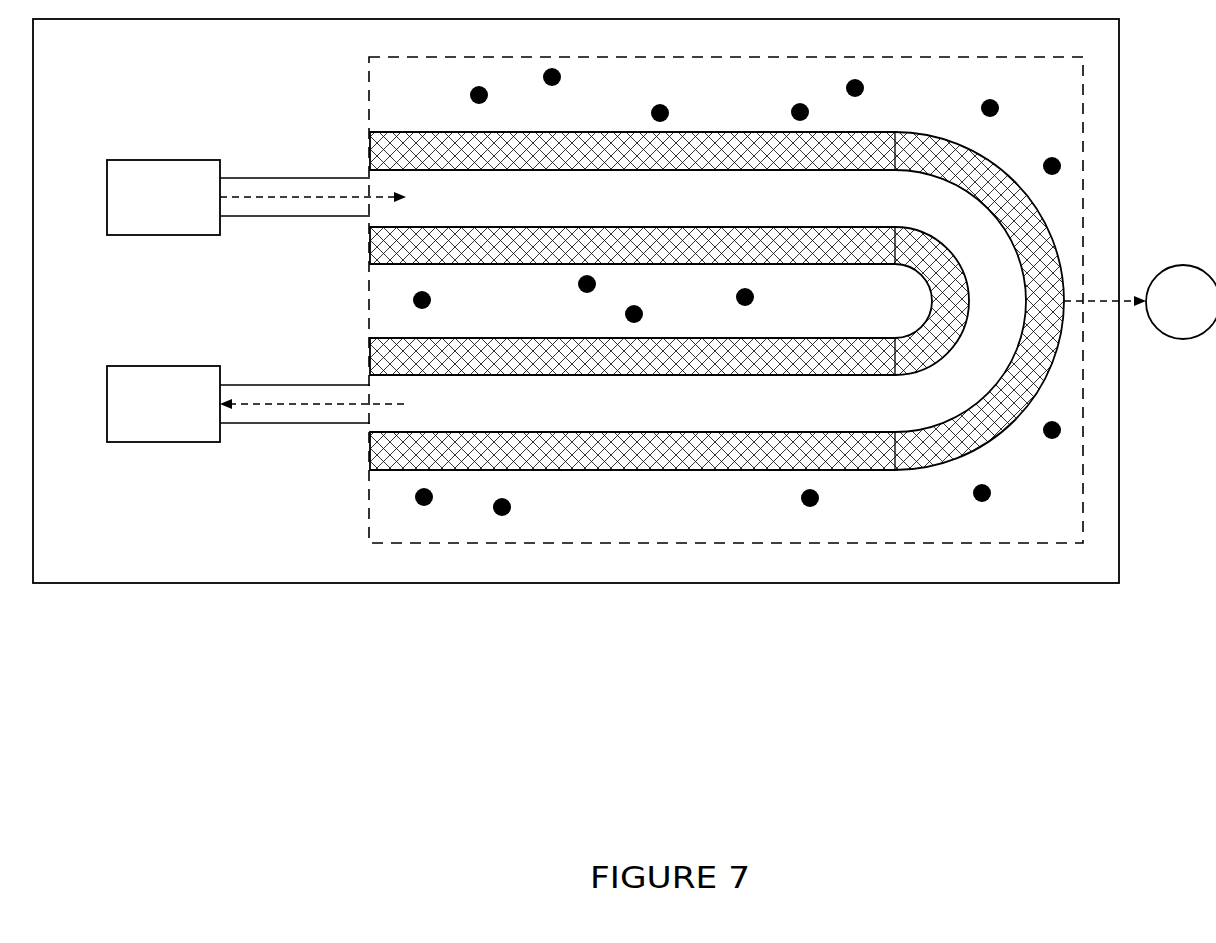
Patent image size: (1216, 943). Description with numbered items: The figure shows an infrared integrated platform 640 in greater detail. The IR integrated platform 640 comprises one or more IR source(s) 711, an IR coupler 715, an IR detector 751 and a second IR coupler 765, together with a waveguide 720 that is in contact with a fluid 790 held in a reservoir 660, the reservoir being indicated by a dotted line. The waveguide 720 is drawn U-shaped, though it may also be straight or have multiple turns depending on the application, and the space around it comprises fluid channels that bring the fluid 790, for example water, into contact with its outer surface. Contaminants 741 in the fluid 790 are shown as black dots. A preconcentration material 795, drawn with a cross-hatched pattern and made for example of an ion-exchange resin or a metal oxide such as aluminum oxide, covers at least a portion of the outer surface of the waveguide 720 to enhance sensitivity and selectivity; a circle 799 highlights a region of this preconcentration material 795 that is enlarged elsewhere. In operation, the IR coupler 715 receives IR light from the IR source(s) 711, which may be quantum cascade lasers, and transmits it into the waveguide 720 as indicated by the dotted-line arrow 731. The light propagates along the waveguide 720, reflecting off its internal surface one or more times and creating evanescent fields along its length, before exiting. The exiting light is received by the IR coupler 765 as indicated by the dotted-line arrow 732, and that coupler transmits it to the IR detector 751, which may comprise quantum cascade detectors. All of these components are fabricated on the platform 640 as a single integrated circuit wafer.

The IR integrated platform 640 is at (295, 583).
The reservoir 660 is at (369, 487).
The waveguide 720 is at (435, 198).
The preconcentration material 795 is at (782, 338).
The circle 799 is at (1200, 265).
The IR source 711 is at (145, 160).
The IR coupler 715 is at (277, 217).
The dotted-line arrow 731 is at (315, 197).
The IR detector 751 is at (193, 366).
The IR coupler 765 is at (267, 423).
The dotted-line arrow 732 is at (318, 404).
The contaminants 741 is at (660, 105).
The fluid 790 is at (628, 291).